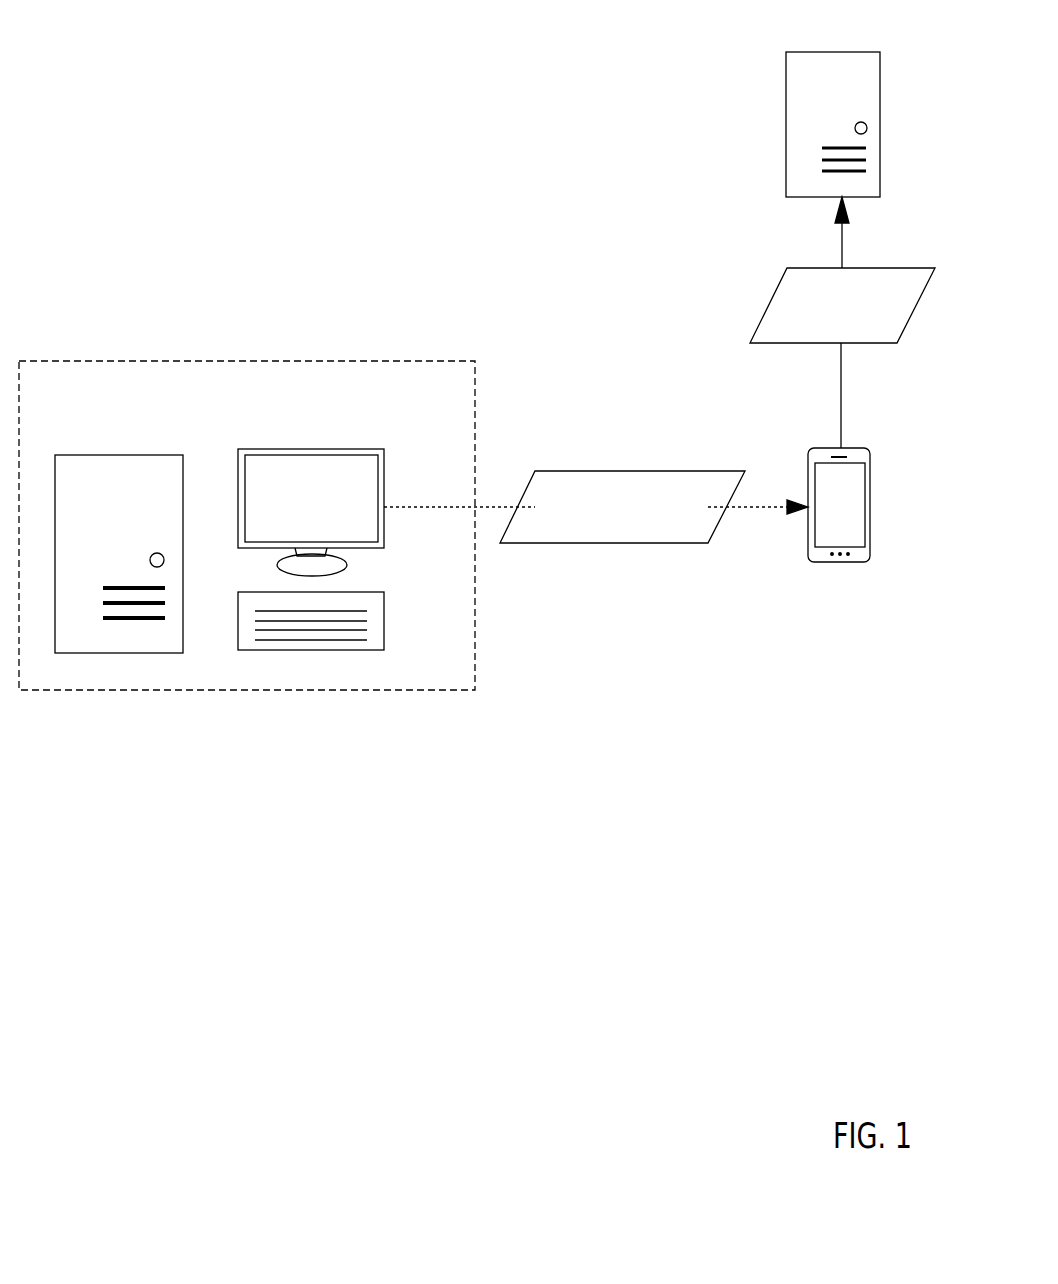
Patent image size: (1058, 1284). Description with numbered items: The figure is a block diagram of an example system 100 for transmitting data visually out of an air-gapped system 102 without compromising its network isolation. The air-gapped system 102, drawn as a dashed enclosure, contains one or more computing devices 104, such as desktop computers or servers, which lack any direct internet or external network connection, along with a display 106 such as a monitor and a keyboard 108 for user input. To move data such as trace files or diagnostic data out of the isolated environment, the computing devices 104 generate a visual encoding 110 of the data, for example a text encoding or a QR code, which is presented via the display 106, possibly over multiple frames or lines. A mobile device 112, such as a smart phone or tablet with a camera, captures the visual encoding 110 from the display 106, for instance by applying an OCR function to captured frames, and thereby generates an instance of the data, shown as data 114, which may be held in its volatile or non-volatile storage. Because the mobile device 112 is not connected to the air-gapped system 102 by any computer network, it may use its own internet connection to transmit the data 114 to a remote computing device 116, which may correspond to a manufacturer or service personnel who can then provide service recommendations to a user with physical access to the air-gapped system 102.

The example system 100 is at (123, 823).
The air-gapped system 102 is at (238, 396).
The computing devices 104 is at (130, 454).
The display 106 is at (313, 448).
The keyboard 108 is at (374, 591).
The visual encoding 110 is at (683, 532).
The mobile device 112 is at (823, 448).
The data 114 is at (882, 319).
The remote computing device 116 is at (807, 52).